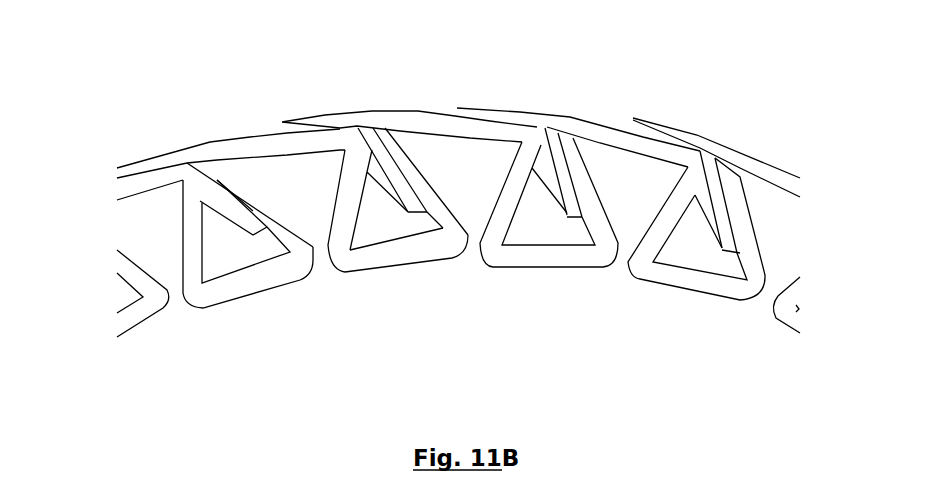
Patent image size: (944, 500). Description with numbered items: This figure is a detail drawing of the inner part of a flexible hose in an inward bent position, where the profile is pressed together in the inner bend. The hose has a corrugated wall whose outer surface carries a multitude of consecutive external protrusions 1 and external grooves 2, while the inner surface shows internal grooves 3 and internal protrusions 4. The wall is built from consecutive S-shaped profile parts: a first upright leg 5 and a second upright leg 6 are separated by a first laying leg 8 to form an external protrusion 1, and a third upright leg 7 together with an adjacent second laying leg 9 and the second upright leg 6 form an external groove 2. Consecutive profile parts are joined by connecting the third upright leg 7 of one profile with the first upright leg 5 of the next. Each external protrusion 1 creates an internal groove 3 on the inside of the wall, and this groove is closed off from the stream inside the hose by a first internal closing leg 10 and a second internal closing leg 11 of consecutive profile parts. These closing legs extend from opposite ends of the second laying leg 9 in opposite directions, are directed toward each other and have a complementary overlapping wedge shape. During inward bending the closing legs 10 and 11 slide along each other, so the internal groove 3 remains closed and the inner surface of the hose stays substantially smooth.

The external protrusion 1 is at (423, 213).
The external groove 2 is at (315, 197).
The internal groove 3 is at (385, 200).
The internal protrusion 4 is at (258, 118).
The first upright leg 5 is at (427, 193).
The second upright leg 6 is at (343, 193).
The third upright leg 7 is at (223, 170).
The first laying leg 8 is at (413, 250).
The second laying leg 9 is at (287, 135).
The first internal closing leg 10 is at (170, 152).
The second internal closing leg 11 is at (370, 167).